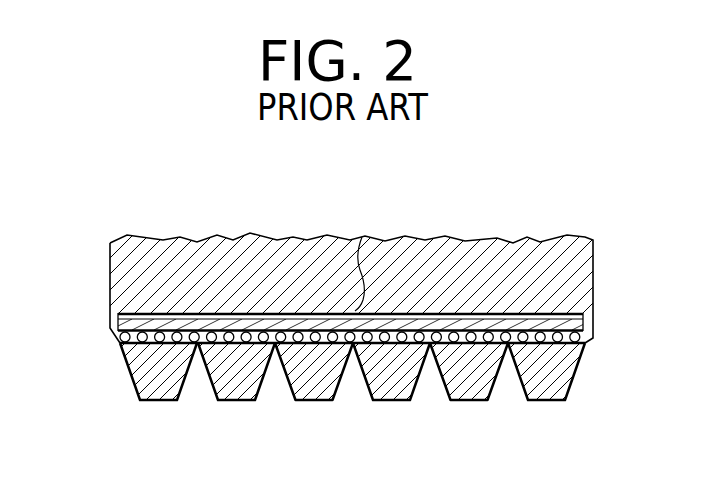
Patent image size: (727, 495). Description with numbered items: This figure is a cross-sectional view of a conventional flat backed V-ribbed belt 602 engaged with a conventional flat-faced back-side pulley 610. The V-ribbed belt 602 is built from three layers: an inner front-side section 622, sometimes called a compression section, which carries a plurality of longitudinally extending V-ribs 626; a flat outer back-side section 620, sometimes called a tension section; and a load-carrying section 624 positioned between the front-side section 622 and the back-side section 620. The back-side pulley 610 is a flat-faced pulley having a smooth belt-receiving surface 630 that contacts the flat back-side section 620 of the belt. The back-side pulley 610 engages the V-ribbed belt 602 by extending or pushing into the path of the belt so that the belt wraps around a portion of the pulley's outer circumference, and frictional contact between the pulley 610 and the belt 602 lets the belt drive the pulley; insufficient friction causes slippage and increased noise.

The V-ribbed belt 602 is at (592, 358).
The back-side pulley 610 is at (277, 282).
The back-side section 620 is at (115, 329).
The front-side section 622 is at (140, 399).
The load-carrying section 624 is at (124, 337).
The V-ribs 626 is at (522, 380).
The belt-receiving surface 630 is at (363, 237).